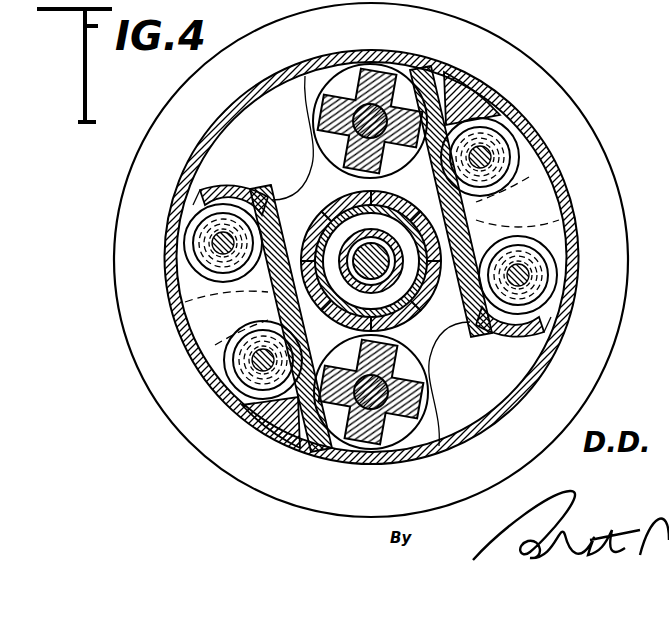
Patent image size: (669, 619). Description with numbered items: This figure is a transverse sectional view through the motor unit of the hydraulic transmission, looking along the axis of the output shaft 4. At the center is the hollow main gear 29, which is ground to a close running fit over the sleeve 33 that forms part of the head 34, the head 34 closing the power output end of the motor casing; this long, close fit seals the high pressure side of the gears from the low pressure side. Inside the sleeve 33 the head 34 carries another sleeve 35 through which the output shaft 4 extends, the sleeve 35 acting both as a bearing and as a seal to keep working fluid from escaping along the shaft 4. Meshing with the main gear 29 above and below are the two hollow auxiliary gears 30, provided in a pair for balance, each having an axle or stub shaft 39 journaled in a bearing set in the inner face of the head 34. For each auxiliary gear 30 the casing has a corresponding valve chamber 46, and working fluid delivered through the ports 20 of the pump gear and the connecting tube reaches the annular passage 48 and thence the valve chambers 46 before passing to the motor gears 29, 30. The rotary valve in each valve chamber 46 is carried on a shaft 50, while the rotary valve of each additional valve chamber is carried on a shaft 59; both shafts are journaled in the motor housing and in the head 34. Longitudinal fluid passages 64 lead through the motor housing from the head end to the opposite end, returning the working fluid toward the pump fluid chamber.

The output shaft 4 is at (384, 266).
The ports 20 is at (456, 72).
The main gear 29 is at (371, 261).
The auxiliary gears 30 is at (380, 63).
The sleeve 33 is at (371, 260).
The head 34 is at (598, 373).
The sleeve 35 is at (371, 270).
The axle or stub shaft 39 is at (370, 120).
The valve chamber 46 is at (404, 62).
The annular passage 48 is at (473, 222).
The shaft 50 is at (485, 153).
The shaft 59 is at (520, 276).
The longitudinal fluid passages 64 is at (470, 240).